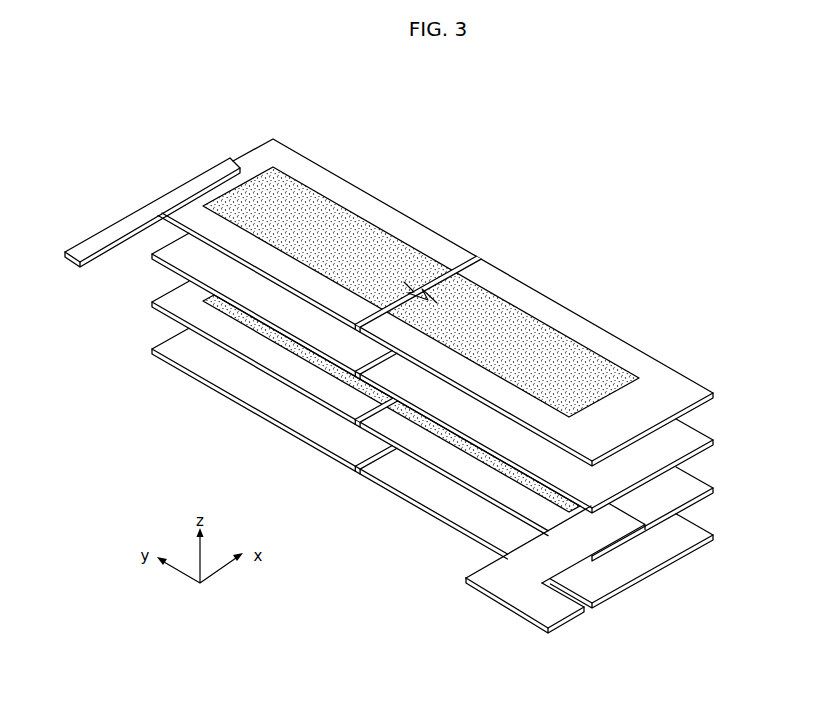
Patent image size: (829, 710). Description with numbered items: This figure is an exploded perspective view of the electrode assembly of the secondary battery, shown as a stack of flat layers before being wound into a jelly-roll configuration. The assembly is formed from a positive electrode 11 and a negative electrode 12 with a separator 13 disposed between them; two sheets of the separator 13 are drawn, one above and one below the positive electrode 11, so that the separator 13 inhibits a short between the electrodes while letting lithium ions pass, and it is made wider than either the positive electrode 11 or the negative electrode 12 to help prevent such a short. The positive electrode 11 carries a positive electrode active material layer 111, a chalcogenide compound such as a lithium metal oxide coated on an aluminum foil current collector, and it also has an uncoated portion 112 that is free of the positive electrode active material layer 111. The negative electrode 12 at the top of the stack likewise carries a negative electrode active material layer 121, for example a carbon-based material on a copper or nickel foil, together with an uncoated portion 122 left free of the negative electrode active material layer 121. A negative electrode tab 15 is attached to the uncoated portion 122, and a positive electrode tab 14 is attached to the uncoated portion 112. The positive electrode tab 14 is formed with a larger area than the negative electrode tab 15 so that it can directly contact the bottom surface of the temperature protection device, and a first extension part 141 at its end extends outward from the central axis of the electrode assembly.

The positive electrode 11 is at (432, 436).
The positive electrode active material layer 111 is at (430, 428).
The uncoated portion 112 is at (451, 457).
The negative electrode 12 is at (435, 273).
The negative electrode active material layer 121 is at (328, 215).
The uncoated portion 122 is at (373, 210).
The separator 13 is at (170, 257).
The positive electrode tab 14 is at (570, 590).
The first extension part 141 is at (558, 610).
The negative electrode tab 15 is at (113, 226).